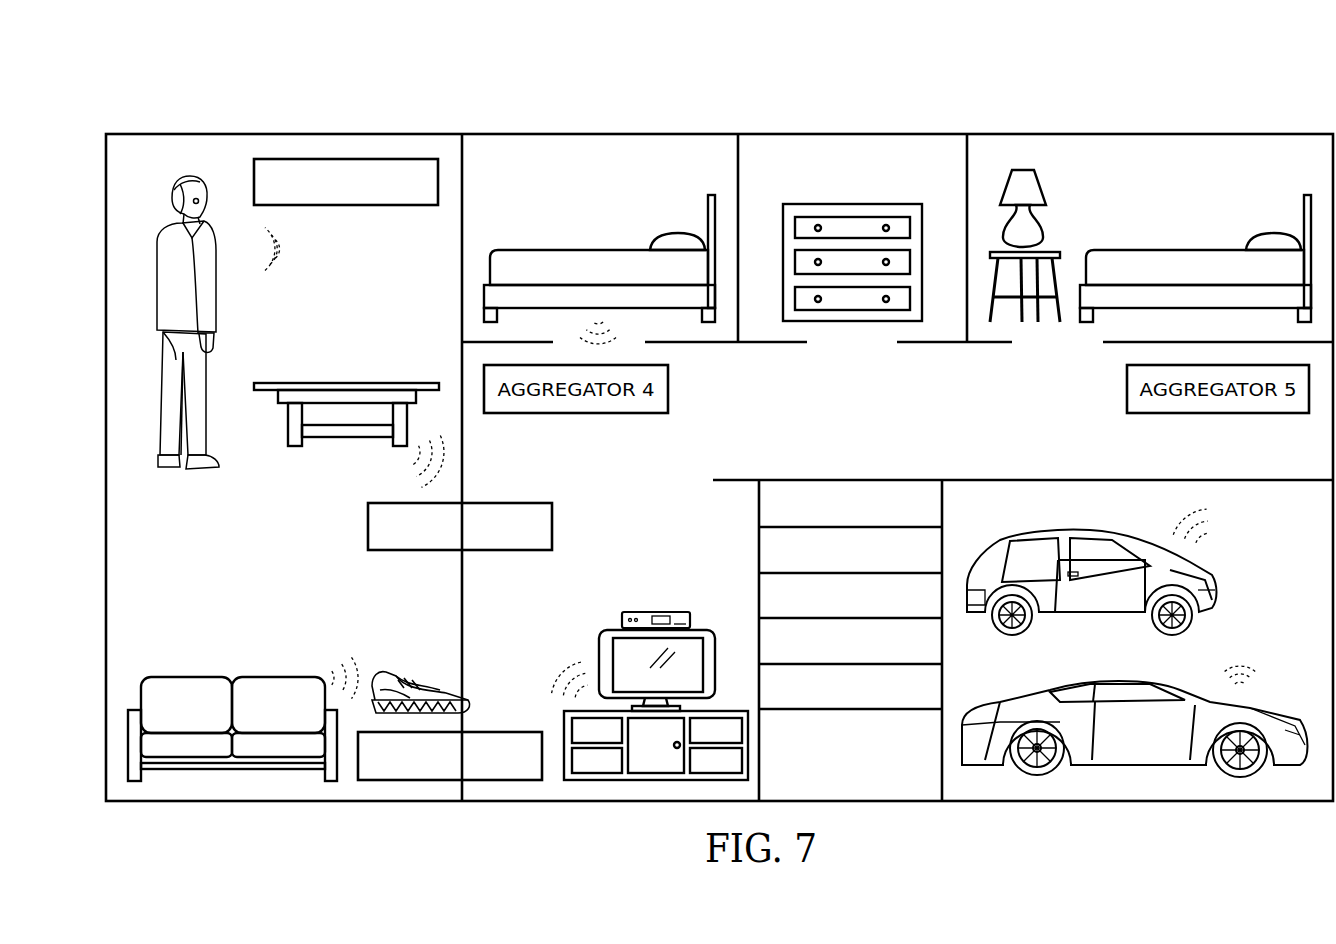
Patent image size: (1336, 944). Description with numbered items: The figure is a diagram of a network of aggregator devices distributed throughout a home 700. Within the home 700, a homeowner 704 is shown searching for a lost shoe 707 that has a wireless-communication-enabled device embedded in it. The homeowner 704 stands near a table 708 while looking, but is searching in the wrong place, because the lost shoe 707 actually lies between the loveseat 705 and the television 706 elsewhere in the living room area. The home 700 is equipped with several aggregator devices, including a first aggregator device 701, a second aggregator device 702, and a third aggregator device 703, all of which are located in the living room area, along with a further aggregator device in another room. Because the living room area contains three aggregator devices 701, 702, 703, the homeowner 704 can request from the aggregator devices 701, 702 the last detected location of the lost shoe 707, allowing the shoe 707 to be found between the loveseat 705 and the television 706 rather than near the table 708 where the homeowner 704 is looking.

The home 700 is at (1160, 92).
The Aggregator device 1 701 is at (508, 732).
The Aggregator device 2 702 is at (347, 206).
The Aggregator device 3 703 is at (367, 527).
The homeowner 704 is at (178, 472).
The loveseat 705 is at (186, 673).
The television 706 is at (655, 612).
The lost shoe 707 is at (410, 660).
The table 708 is at (347, 380).